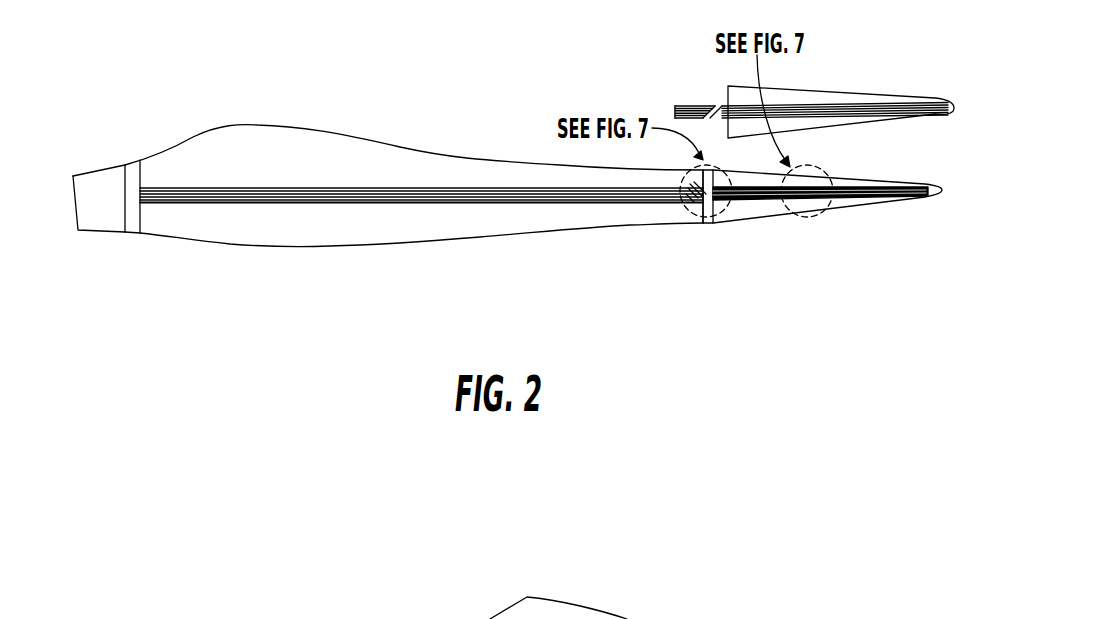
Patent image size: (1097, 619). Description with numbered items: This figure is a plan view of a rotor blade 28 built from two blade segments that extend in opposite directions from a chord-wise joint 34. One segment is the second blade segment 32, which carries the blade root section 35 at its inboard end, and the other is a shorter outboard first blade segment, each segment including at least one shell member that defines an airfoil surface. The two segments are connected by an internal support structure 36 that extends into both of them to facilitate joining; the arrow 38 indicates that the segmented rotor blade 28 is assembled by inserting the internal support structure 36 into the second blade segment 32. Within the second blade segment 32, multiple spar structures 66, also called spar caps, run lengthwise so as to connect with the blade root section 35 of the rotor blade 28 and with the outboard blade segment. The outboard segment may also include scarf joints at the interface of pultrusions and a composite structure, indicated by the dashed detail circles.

The rotor blade 28 is at (107, 80).
The second blade segment 32 is at (175, 227).
The chord-wise joint 34 is at (712, 225).
The blade root section 35 is at (100, 222).
The internal support structure 36 is at (693, 108).
The arrow 38 is at (840, 174).
The spar structures 66 is at (417, 188).